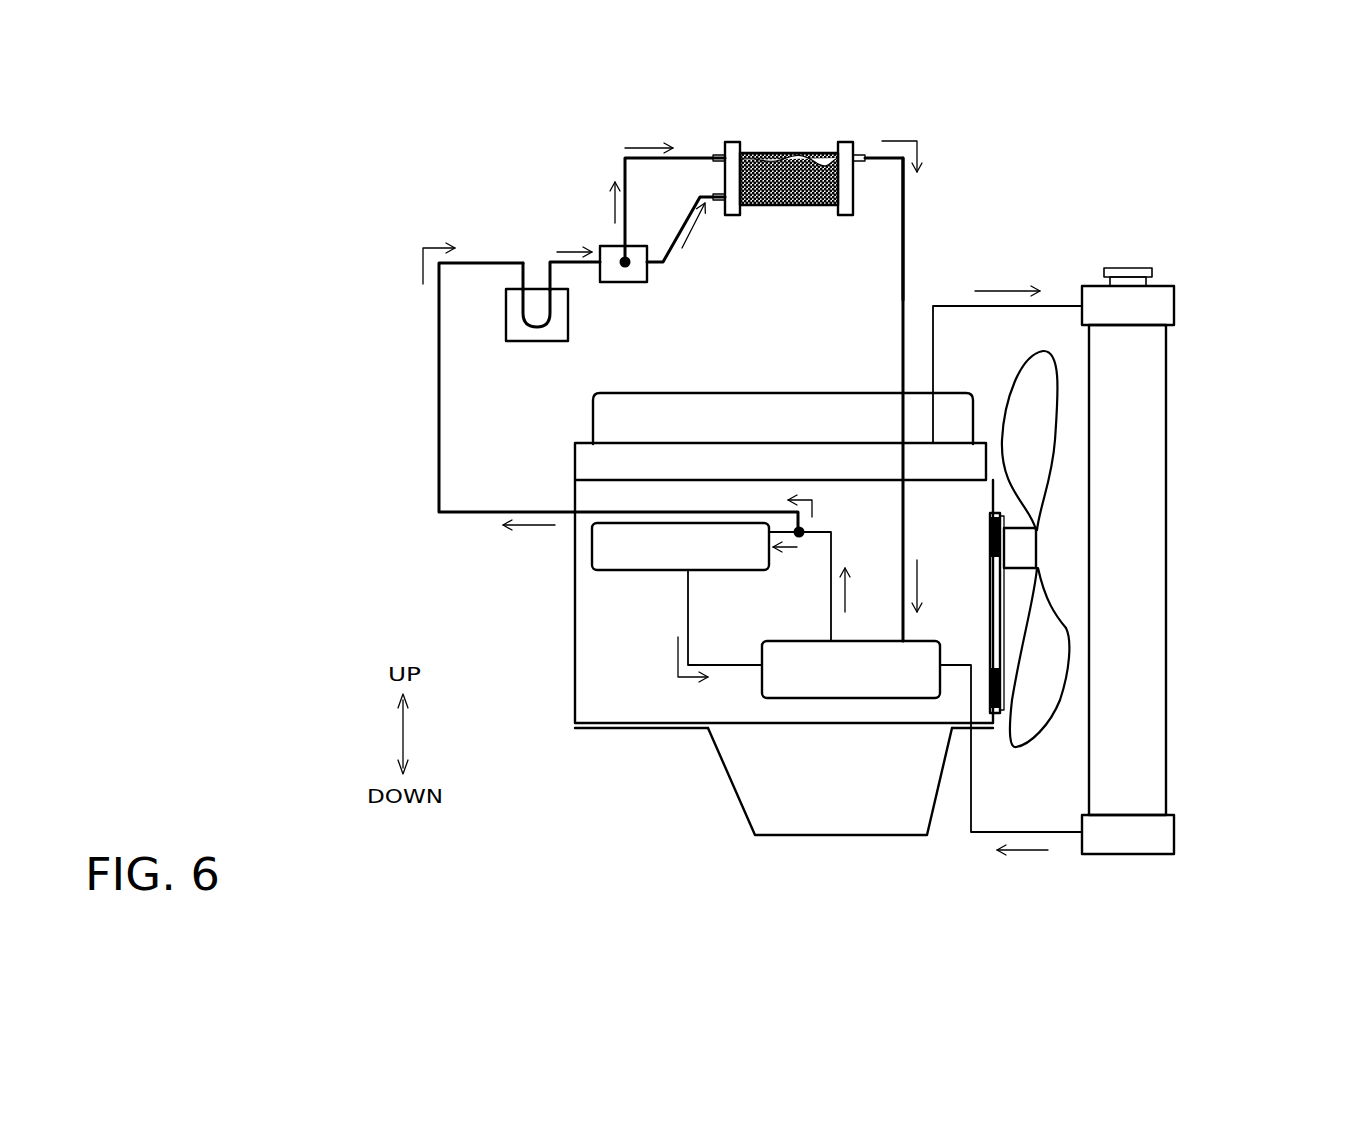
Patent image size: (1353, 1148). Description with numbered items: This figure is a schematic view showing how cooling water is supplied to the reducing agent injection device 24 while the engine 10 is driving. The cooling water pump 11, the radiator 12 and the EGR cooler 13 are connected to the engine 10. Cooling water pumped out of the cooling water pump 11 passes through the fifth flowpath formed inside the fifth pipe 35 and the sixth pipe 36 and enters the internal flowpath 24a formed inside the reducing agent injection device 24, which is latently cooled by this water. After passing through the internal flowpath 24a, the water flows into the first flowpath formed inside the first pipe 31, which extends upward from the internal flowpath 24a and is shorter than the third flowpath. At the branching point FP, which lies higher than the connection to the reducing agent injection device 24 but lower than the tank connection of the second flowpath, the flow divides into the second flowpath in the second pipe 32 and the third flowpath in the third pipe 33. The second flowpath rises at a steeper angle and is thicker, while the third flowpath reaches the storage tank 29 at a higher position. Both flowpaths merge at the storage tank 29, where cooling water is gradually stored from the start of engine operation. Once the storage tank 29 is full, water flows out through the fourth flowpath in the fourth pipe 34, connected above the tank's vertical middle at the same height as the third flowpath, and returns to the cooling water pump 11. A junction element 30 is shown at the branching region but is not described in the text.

The engine 10 is at (575, 663).
The cooling water pump 11 is at (850, 699).
The radiator 12 is at (1167, 629).
The EGR cooler 13 is at (592, 545).
The reducing agent injection device 24 is at (543, 341).
The internal flowpath 24a is at (530, 322).
The storage tank 29 is at (789, 153).
The flow path junction 30 is at (627, 282).
The first pipe 31 is at (545, 262).
The second pipe 32 is at (663, 262).
The third pipe 33 is at (622, 163).
The fourth pipe 34 is at (905, 236).
The fifth pipe 35 is at (439, 303).
The sixth pipe 36 is at (618, 397).
The branching point FP is at (628, 260).